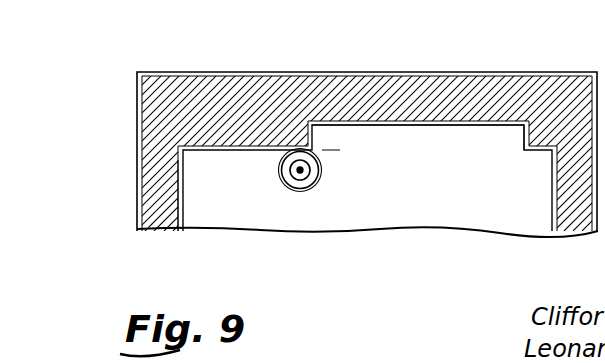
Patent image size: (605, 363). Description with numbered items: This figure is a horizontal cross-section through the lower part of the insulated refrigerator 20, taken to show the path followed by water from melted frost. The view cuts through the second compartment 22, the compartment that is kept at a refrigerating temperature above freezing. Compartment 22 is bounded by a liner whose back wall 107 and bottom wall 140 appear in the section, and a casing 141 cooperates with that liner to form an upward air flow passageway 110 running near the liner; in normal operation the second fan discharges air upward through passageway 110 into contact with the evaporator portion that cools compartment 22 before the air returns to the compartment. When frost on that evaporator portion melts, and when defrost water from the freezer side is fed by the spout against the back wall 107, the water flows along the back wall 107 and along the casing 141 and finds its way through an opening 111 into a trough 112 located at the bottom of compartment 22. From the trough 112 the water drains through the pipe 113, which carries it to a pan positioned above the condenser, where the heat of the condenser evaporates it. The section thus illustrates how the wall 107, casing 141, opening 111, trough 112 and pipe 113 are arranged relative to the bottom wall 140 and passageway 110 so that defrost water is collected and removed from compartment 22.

The insulated refrigerator 20 is at (274, 72).
The second compartment 22 is at (338, 181).
The back wall 107 is at (205, 152).
The upward air flow passageway 110 is at (423, 135).
The opening 111 is at (327, 150).
The trough 112 is at (282, 163).
The pipe 113 is at (298, 174).
The bottom wall 140 is at (483, 210).
The casing 141 is at (498, 124).